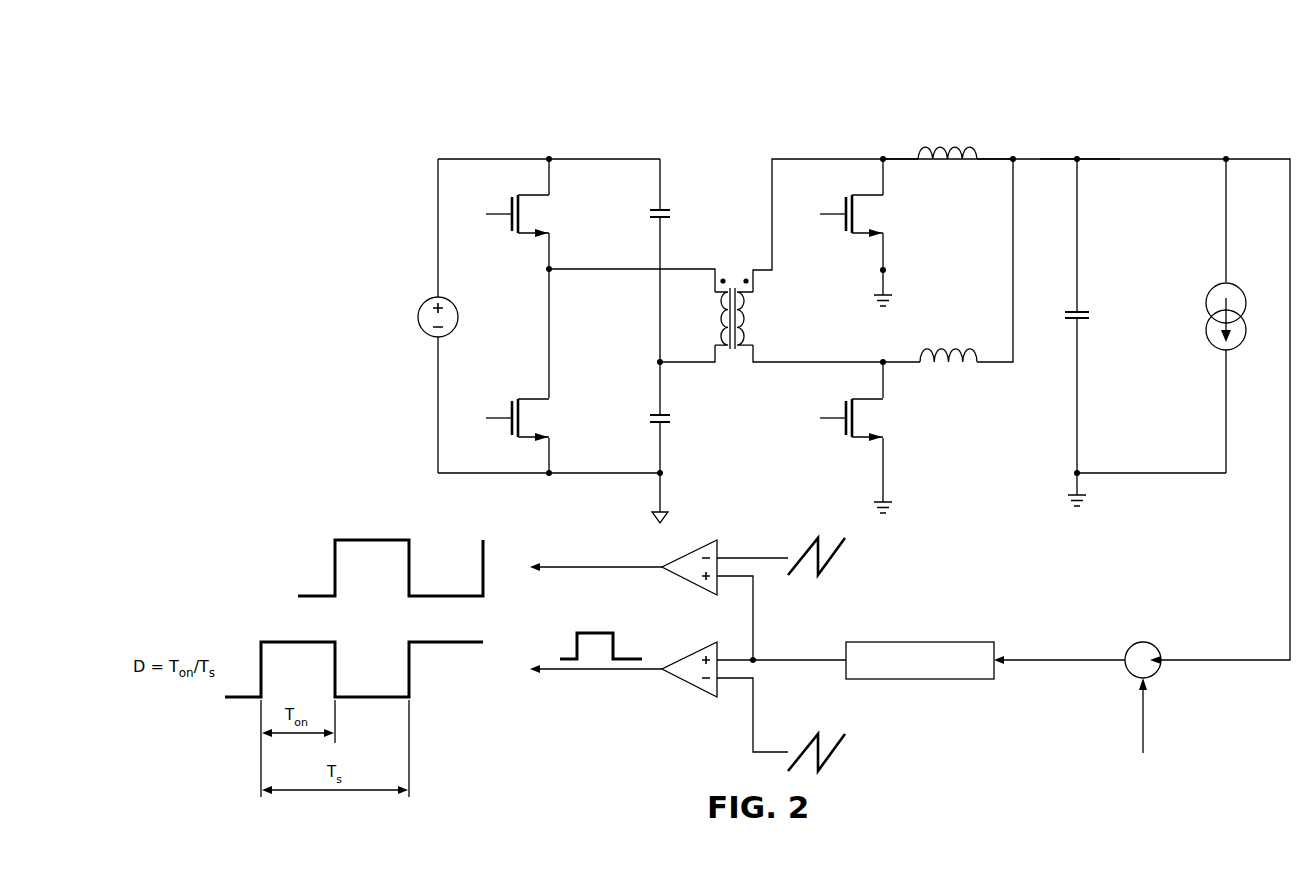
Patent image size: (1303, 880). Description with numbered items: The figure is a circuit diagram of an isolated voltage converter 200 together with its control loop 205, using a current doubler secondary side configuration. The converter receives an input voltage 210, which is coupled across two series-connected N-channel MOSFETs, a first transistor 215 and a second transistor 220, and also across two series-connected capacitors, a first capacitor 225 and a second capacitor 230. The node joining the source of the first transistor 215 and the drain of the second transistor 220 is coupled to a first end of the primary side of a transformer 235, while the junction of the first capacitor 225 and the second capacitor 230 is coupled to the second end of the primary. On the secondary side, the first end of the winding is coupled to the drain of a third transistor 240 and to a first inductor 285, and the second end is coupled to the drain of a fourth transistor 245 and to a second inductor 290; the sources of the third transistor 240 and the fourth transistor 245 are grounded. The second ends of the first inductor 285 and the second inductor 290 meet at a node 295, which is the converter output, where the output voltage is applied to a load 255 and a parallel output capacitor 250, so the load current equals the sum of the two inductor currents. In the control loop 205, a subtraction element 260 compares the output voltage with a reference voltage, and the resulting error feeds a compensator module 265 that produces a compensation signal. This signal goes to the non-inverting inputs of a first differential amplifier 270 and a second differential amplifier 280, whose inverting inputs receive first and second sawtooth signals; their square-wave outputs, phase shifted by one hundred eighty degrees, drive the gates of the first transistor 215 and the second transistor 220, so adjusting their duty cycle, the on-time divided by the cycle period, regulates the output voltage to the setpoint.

The isolated voltage converter 200 is at (304, 137).
The control loop 205 is at (992, 553).
The input voltage Vin 210 is at (428, 298).
The transistor Q1 215 is at (511, 208).
The transistor Q2 220 is at (511, 413).
The capacitor C1 225 is at (650, 216).
The capacitor C2 230 is at (650, 421).
The transformer 235 is at (733, 350).
The transistor Q3 240 is at (845, 208).
The transistor Q4 245 is at (845, 413).
The output capacitor 250 is at (1090, 316).
The load 255 is at (1236, 290).
The subtraction element 260 is at (1152, 675).
The compensator module 265 is at (918, 680).
The differential amplifier 270 is at (687, 584).
The differential amplifier 280 is at (687, 686).
The inductor L1 285 is at (962, 147).
The inductor L2 290 is at (962, 346).
The node 295 is at (1078, 150).